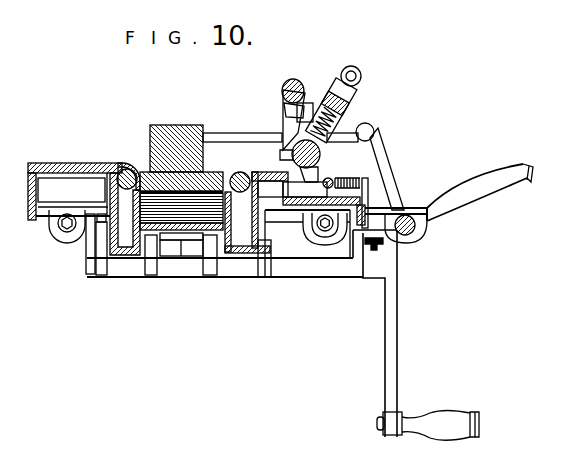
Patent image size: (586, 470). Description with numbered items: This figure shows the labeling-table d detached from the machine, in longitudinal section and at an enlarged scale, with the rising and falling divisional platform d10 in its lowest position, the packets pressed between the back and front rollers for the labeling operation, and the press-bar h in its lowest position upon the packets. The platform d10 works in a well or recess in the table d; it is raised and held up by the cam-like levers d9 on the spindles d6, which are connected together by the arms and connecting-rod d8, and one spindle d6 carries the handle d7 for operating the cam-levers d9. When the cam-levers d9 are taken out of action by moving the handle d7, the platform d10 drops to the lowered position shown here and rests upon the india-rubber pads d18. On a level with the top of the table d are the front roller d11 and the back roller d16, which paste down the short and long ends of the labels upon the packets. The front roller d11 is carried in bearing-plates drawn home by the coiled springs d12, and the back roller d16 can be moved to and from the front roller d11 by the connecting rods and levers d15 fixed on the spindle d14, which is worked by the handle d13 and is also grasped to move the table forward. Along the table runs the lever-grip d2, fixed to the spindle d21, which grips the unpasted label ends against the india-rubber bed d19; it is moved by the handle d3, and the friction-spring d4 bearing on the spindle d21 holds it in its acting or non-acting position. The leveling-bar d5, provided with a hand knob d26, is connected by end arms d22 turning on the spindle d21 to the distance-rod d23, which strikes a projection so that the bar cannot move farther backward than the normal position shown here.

The labeling-table d is at (125, 183).
The back roller d16 is at (113, 170).
The press-bar h is at (181, 146).
The front roller d11 is at (250, 198).
The lever-grip d2 is at (283, 156).
The end arms d22 is at (283, 108).
The leveling-bar d5 is at (294, 84).
The spindle d21 is at (292, 138).
The friction-spring d4 is at (348, 113).
The handle d3 is at (361, 80).
The hand button or knob d26 is at (350, 66).
The connecting rods and levers d15 is at (402, 168).
The coiled springs d12 is at (350, 178).
The india-rubber bed d19 is at (277, 214).
The distance-rod d23 is at (372, 195).
The spindle d14 is at (427, 230).
The handle d13 is at (480, 179).
The arms and connecting-rod d8 is at (88, 250).
The rising and falling divisional platform d10 is at (130, 255).
The cam-like levers d9 is at (223, 291).
The india-rubber pads d18 is at (185, 270).
The spindles d6 is at (323, 263).
The handle d7 is at (428, 405).